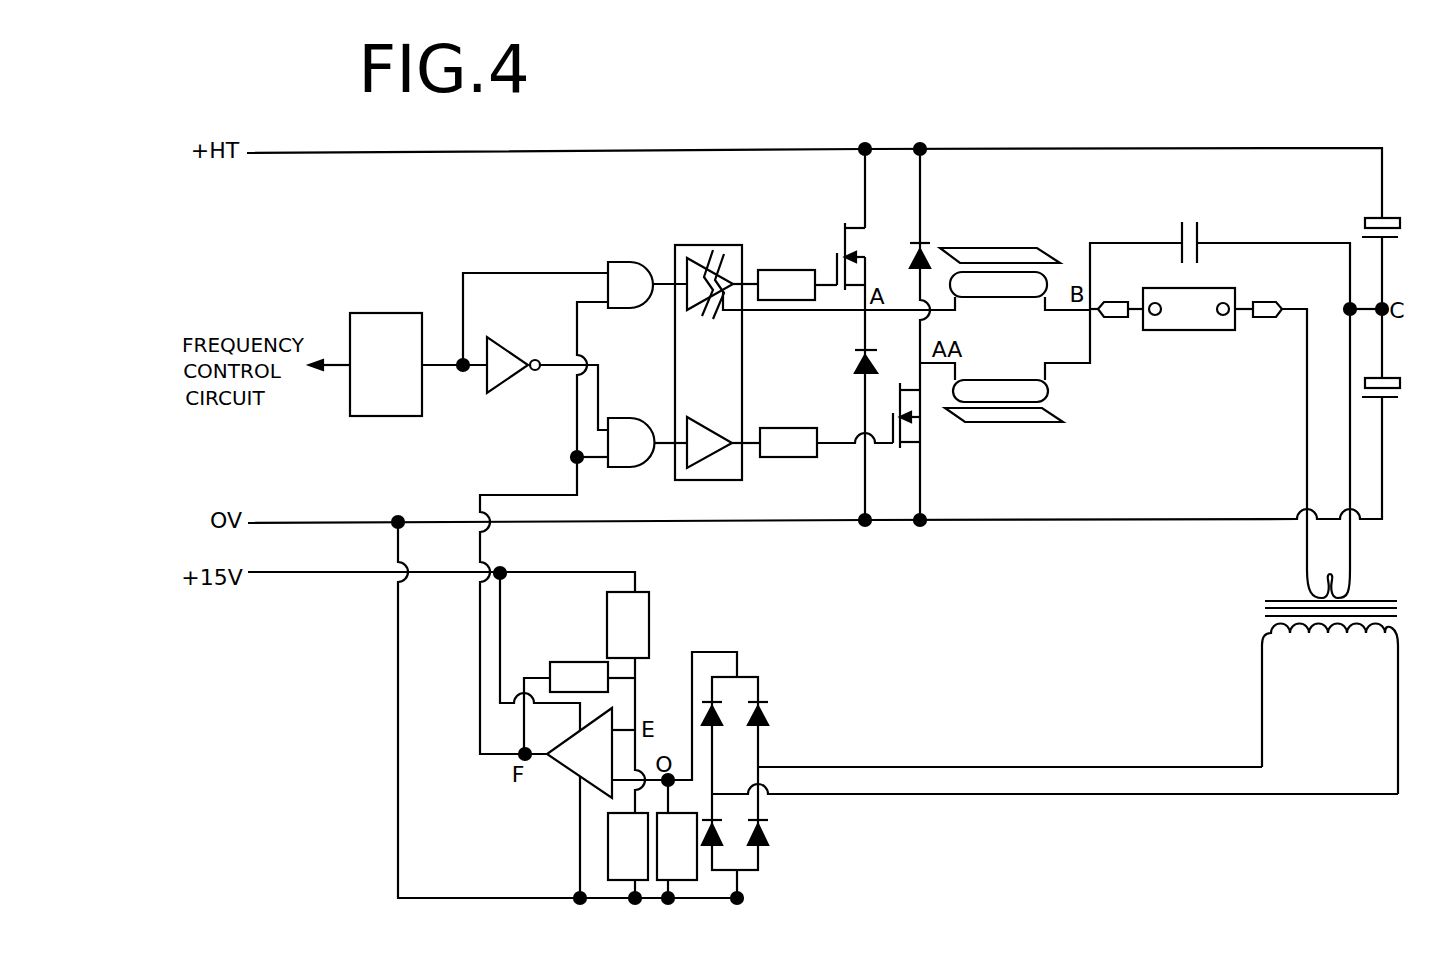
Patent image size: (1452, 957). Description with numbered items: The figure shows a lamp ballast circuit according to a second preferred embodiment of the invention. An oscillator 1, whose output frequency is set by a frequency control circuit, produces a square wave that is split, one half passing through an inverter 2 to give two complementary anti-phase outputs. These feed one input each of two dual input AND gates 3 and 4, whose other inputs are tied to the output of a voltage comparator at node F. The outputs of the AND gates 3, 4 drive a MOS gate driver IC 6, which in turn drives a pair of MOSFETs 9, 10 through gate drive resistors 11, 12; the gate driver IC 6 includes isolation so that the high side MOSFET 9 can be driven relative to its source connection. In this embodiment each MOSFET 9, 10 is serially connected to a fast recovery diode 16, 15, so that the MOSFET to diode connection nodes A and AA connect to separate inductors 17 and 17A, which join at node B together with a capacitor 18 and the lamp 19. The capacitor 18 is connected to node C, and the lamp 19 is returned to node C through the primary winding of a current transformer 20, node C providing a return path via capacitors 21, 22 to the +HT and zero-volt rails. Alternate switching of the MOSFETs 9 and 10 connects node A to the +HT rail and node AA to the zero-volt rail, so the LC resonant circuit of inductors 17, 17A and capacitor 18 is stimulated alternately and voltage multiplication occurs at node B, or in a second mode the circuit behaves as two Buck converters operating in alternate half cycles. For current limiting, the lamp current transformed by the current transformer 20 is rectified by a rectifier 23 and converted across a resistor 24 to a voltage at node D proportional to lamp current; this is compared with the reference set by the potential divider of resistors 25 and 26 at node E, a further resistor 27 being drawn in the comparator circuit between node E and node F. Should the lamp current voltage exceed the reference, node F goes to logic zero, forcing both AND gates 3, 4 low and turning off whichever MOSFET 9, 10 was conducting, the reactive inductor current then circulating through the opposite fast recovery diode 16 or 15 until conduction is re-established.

The oscillator 1 is at (386, 364).
The inverter 2 is at (513, 365).
The AND gate 3 is at (630, 285).
The AND gate 4 is at (631, 442).
The MOS gate driver IC 6 is at (644, 521).
The MOSFET 9 is at (842, 256).
The MOSFET 10 is at (893, 415).
The gate drive resistor 11 is at (786, 285).
The gate drive resistor 12 is at (788, 443).
The fast recovery diode 15 is at (906, 254).
The fast recovery diode 16 is at (850, 363).
The inductor 17 is at (1000, 290).
The inductor 17A is at (1004, 384).
The capacitor 18 is at (1190, 228).
The lamp 19 is at (1189, 309).
The current transformer 20 is at (1330, 682).
The capacitor 21 is at (1397, 217).
The capacitor 22 is at (1401, 379).
The rectifier 23 is at (735, 773).
The resistor 24 is at (677, 846).
The resistor 25 is at (628, 625).
The resistor 26 is at (628, 846).
The resistor 27 is at (579, 677).